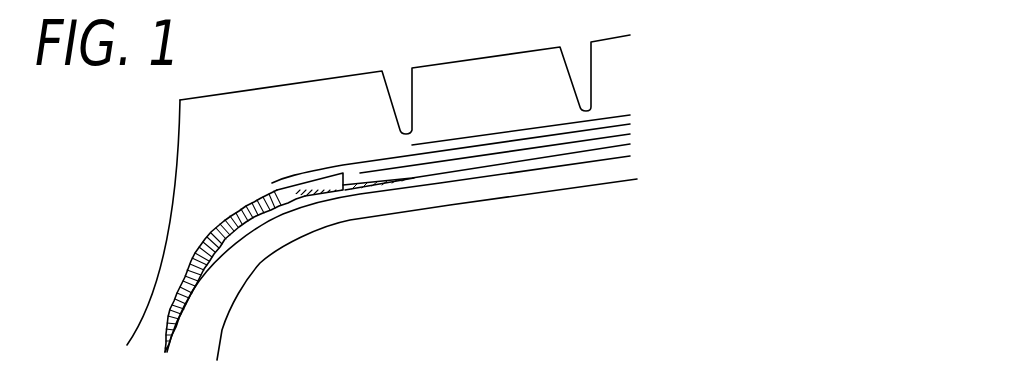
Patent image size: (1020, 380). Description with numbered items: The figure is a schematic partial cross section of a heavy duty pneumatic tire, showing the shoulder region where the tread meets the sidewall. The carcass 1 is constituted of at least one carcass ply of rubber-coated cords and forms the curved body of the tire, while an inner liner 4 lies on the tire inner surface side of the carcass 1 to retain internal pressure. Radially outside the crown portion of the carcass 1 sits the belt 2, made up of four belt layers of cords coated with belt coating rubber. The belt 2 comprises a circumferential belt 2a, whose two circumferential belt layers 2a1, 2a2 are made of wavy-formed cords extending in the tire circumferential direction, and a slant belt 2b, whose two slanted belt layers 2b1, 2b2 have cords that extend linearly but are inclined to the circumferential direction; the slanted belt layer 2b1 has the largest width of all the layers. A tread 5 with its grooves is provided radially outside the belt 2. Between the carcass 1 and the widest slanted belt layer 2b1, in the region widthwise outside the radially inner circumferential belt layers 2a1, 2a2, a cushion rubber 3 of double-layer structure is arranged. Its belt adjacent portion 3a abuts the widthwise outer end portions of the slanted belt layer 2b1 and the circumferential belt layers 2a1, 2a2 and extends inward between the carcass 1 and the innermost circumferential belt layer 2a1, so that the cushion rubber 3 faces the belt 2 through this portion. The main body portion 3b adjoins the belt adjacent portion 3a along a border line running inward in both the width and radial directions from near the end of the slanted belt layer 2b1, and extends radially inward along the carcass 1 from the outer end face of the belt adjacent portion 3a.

The carcass 1 is at (453, 183).
The belt 2 is at (540, 124).
The circumferential belt 2a is at (559, 163).
The circumferential belt layer 2a1 is at (630, 145).
The circumferential belt layer 2a2 is at (630, 134).
The slant belt 2b is at (523, 116).
The slanted belt layer 2b1 is at (630, 124).
The slanted belt layer 2b2 is at (630, 115).
The cushion rubber 3 is at (289, 262).
The belt adjacent portion 3a is at (342, 194).
The main body portion 3b is at (245, 271).
The inner liner 4 is at (549, 191).
The tread 5 is at (450, 62).